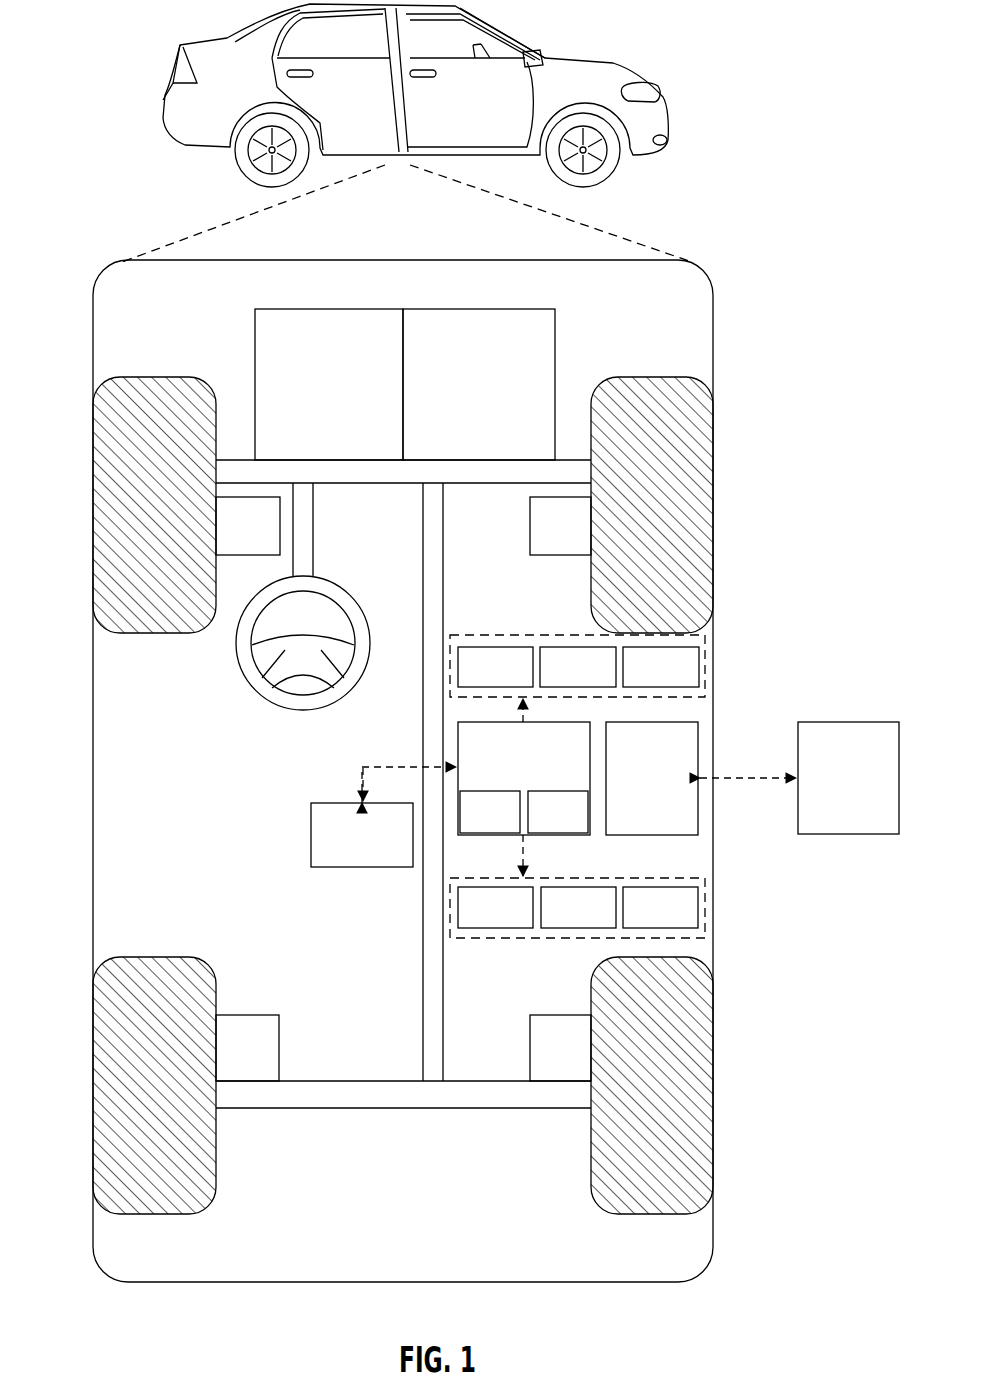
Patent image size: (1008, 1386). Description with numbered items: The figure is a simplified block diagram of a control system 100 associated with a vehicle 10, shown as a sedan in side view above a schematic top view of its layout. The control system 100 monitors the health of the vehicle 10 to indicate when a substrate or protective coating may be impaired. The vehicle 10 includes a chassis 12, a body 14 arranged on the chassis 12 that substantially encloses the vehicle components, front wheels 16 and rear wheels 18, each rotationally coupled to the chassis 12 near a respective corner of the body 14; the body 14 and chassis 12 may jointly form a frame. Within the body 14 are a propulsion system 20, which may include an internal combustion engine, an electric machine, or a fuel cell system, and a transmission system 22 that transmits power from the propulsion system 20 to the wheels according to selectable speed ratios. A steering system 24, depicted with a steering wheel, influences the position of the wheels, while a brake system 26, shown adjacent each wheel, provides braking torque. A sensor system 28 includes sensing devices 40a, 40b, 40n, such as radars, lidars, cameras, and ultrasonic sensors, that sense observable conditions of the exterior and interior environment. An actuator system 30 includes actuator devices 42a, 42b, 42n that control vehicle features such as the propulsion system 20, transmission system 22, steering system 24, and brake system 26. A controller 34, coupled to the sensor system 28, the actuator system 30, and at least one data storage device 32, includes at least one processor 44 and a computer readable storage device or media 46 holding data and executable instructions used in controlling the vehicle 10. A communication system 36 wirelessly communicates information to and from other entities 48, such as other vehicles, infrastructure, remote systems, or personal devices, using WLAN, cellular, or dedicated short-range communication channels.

The vehicle 10 is at (185, 80).
The control system 100 is at (766, 156).
The chassis 12 is at (420, 950).
The body 14 is at (93, 735).
The front wheels 16 is at (160, 378).
The rear wheels 18 is at (155, 1215).
The propulsion system 20 is at (313, 396).
The transmission system 22 is at (463, 396).
The steering system 24 is at (321, 553).
The brake system 26 is at (232, 539).
The sensor system 28 is at (540, 636).
The actuator system 30 is at (545, 940).
The data storage device 32 is at (346, 849).
The controller 34 is at (507, 771).
The communication system 36 is at (636, 792).
The sensing device 40a is at (472, 682).
The sensing device 40b is at (555, 682).
The sensing device 40n is at (638, 682).
The actuator device 42a is at (472, 922).
The actuator device 42b is at (555, 922).
The actuator device 42n is at (638, 922).
The processor 44 is at (474, 826).
The computer readable storage device or media 46 is at (542, 826).
The other entities 48 is at (832, 792).